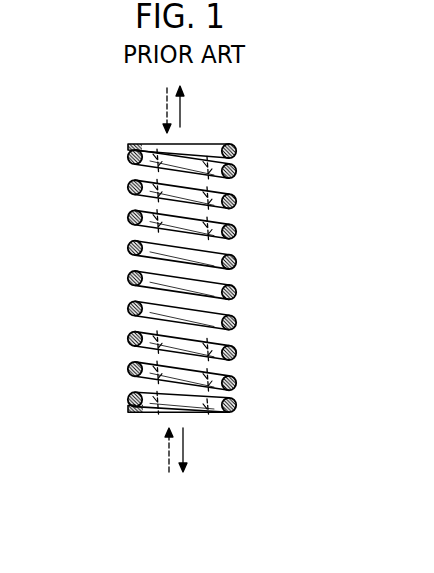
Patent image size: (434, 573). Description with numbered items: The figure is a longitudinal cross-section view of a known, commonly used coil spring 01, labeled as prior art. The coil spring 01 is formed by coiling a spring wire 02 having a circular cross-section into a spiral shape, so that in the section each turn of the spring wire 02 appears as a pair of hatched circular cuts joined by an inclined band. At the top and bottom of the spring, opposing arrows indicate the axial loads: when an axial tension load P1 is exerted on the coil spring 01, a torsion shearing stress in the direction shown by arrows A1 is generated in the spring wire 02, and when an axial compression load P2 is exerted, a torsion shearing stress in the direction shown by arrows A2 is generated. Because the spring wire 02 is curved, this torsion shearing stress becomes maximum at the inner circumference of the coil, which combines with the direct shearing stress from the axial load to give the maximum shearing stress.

The coil spring 01 is at (245, 262).
The spring wire 02 is at (128, 312).
The arrows showing torsion shearing stress direction under tension A1 is at (225, 281).
The arrows showing torsion shearing stress direction under compression A2 is at (249, 278).
The axial tension load P1 is at (196, 279).
The axial compression load P2 is at (155, 280).